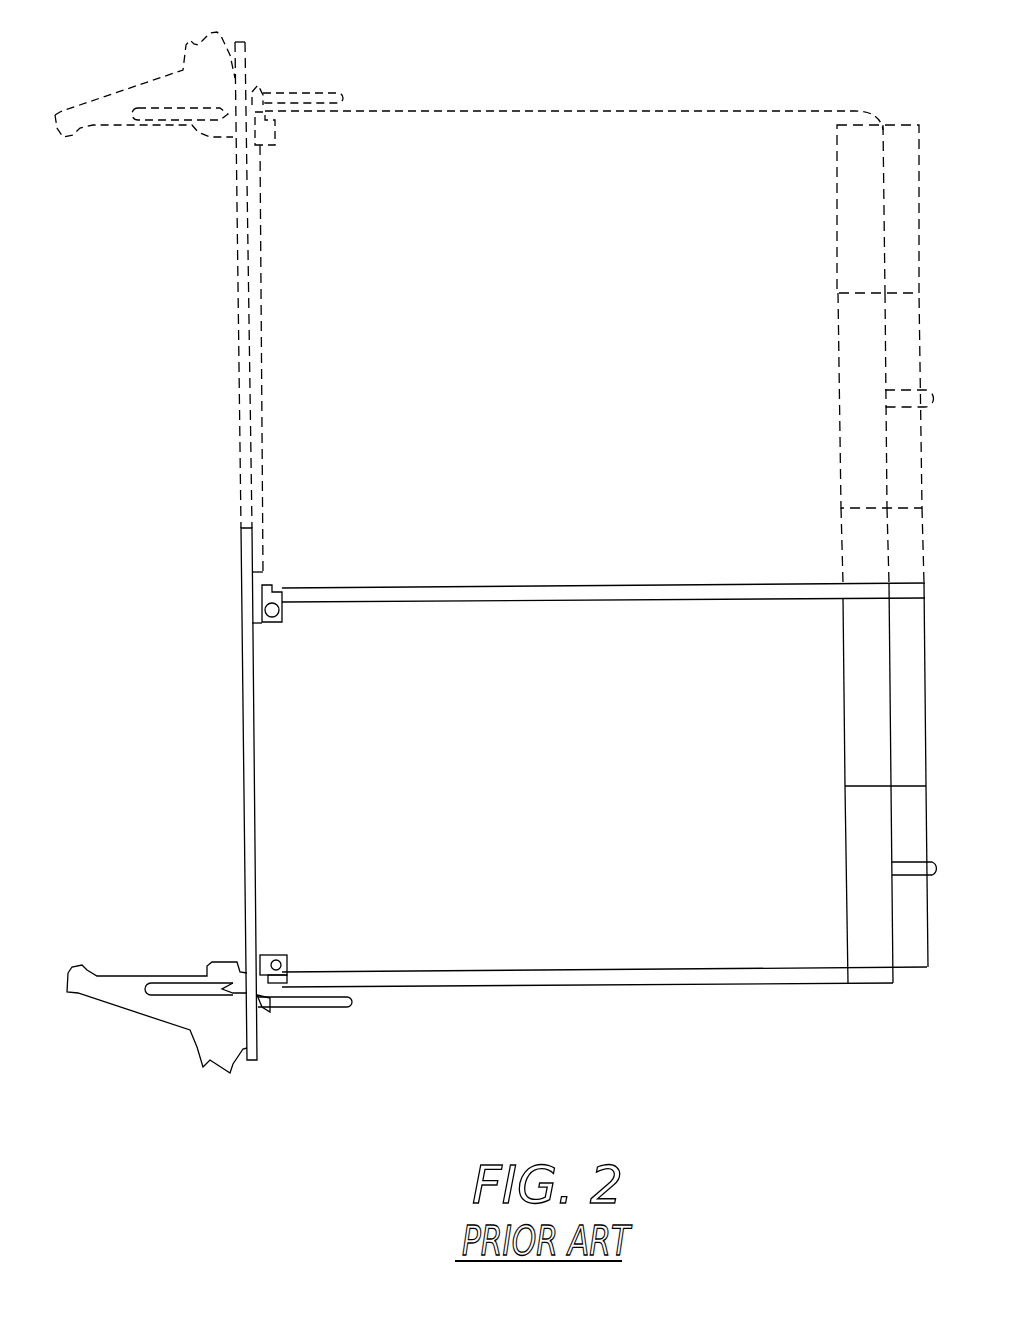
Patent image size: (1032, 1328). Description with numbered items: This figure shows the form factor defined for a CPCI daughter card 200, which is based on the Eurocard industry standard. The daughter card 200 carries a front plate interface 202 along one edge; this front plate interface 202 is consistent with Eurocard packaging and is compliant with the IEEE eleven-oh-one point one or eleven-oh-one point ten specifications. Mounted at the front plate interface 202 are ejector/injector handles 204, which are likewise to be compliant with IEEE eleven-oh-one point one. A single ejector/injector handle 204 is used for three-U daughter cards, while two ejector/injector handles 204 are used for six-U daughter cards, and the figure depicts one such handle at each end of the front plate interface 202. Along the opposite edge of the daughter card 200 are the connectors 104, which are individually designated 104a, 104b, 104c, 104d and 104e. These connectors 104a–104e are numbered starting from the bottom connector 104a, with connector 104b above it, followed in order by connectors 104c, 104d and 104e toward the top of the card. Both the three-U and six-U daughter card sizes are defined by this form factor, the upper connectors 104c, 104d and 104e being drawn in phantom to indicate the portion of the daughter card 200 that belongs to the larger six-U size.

The daughter card 200 is at (573, 935).
The front plate interface 202 is at (240, 645).
The ejector/injector handle 204 is at (122, 93).
The connector 104 is at (832, 554).
The bottom connector 104a is at (855, 858).
The connector 104b is at (855, 680).
The connector 104c is at (852, 532).
The connector 104d is at (850, 372).
The connector 104e is at (850, 205).